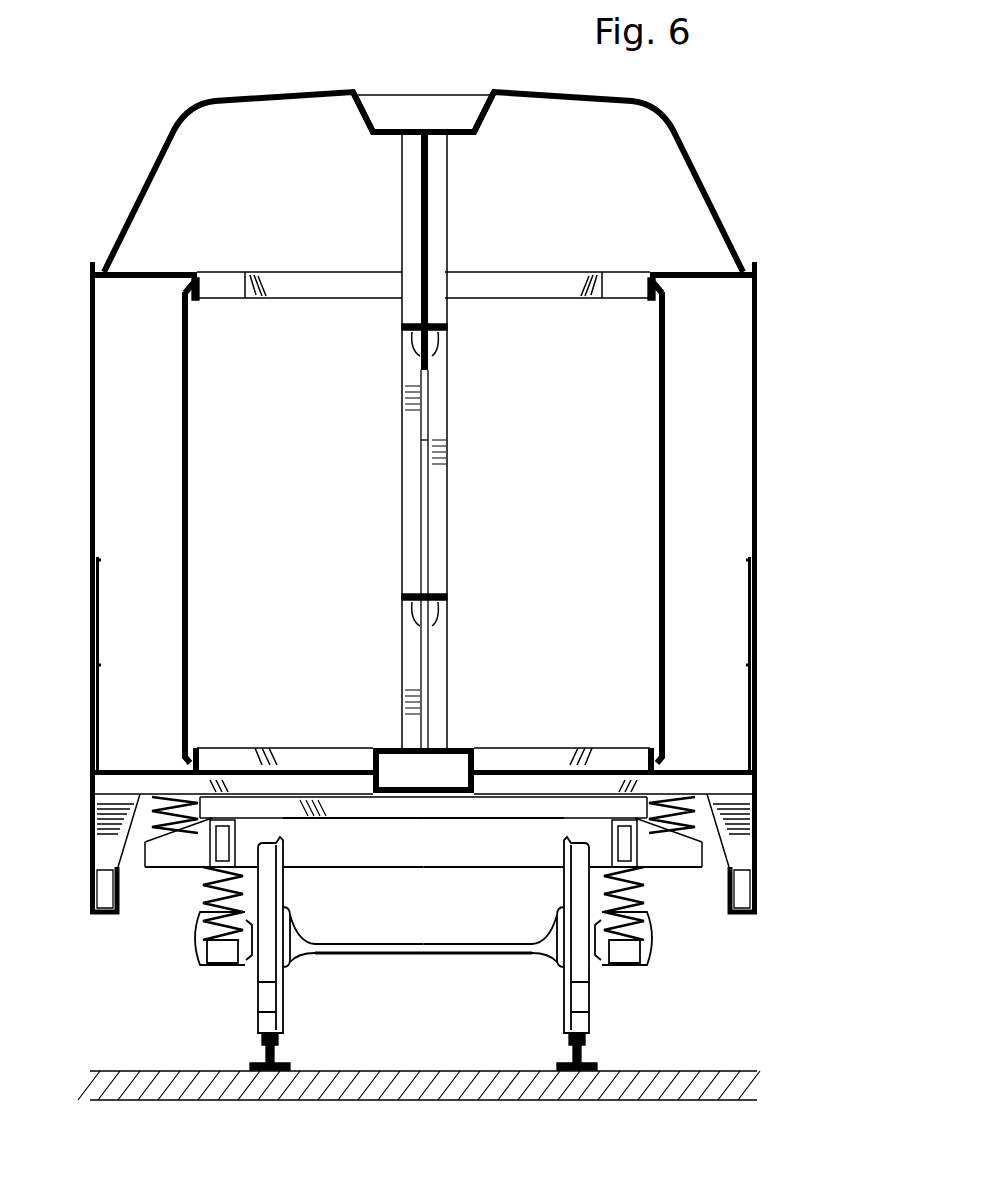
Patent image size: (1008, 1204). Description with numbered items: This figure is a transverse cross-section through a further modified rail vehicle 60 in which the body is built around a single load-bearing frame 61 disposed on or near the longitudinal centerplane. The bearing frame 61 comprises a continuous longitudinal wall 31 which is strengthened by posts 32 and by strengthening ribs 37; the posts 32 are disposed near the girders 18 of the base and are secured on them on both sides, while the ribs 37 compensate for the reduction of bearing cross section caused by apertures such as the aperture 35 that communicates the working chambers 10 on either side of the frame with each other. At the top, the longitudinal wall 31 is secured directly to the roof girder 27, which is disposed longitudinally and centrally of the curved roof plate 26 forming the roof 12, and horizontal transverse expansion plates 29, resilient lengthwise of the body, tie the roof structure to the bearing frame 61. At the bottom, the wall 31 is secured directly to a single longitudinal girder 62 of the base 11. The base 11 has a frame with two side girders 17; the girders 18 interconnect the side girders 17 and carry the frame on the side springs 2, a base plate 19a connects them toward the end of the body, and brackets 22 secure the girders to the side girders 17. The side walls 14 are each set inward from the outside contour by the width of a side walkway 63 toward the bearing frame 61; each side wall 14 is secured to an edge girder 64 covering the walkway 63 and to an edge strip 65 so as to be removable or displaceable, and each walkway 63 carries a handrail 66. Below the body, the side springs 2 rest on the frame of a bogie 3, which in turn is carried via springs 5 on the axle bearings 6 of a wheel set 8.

The rail vehicle 60 is at (429, 556).
The roof 12 is at (428, 74).
The roof plate 26 is at (478, 90).
The roof girder 27 is at (465, 134).
The transverse expansion plates 29 is at (312, 287).
The edge girder 64 is at (140, 280).
The longitudinal wall 31 is at (428, 316).
The strengthening ribs 37 is at (450, 405).
The side walls 14 is at (182, 400).
The load-bearing frame 61 is at (472, 440).
The posts 32 is at (440, 443).
The side walkway 63 is at (149, 532).
The working chambers 10 is at (304, 532).
The aperture 35 is at (428, 543).
The handrail 66 is at (100, 614).
The edge strip 65 is at (200, 757).
The girders 18 is at (338, 756).
The longitudinal girder 62 is at (468, 748).
The base plate 19a is at (545, 770).
The brackets 22 is at (110, 822).
The side girders 17 is at (95, 888).
The side springs 2 is at (158, 862).
The springs 5 is at (204, 896).
The axle bearings 6 is at (213, 953).
The bogie 3 is at (342, 855).
The base 11 is at (489, 796).
The wheel set 8 is at (422, 944).